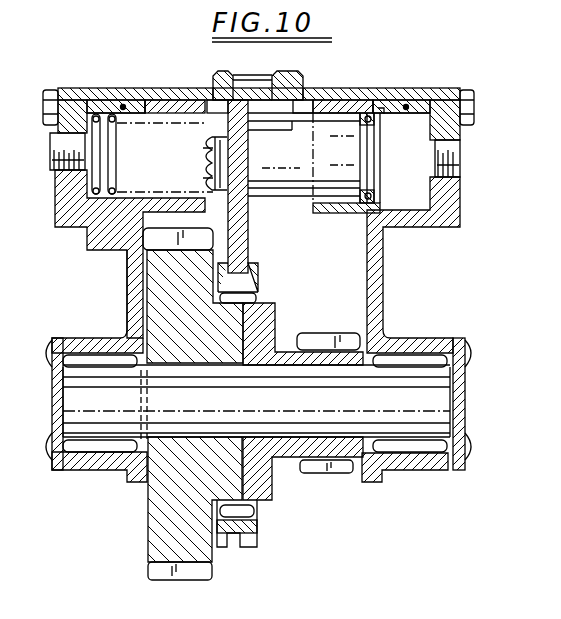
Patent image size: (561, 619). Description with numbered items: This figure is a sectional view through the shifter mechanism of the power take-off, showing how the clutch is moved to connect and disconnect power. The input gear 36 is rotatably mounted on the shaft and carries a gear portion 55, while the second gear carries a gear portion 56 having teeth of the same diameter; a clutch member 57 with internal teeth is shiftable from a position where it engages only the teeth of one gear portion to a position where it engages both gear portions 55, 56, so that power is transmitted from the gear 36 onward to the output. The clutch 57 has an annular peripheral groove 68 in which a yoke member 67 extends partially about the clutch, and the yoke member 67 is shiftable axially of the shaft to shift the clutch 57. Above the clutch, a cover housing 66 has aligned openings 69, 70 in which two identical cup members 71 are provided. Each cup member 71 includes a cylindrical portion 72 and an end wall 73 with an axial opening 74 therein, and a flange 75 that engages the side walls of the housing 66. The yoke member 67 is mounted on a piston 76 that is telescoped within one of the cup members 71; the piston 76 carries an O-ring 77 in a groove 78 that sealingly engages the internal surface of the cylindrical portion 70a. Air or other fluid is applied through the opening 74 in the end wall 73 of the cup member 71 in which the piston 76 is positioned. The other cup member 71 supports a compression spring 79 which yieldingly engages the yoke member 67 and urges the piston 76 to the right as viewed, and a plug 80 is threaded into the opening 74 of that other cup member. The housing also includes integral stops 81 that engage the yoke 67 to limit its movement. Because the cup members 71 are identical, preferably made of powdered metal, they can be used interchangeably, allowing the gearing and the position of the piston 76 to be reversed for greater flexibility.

The cup member 71 is at (66, 86).
The end wall 73 is at (68, 133).
The axial opening 74 is at (62, 193).
The plug 80 is at (50, 160).
The flange 75 is at (72, 225).
The cover housing 66 is at (286, 84).
The integral stop 81 is at (215, 106).
The cylindrical portion 72 is at (164, 106).
The compression spring 79 is at (94, 113).
The opening 69 is at (123, 106).
The yoke member 67 is at (242, 238).
The piston 76 is at (206, 152).
The O-ring 77 is at (370, 168).
The groove 78 is at (340, 211).
The opening 70 is at (406, 106).
The cylindrical portion 70a is at (383, 110).
The clutch member 57 is at (258, 278).
The input gear 36 is at (160, 538).
The gear portion 55 is at (232, 490).
The gear portion 56 is at (345, 461).
The annular peripheral groove 68 is at (235, 542).